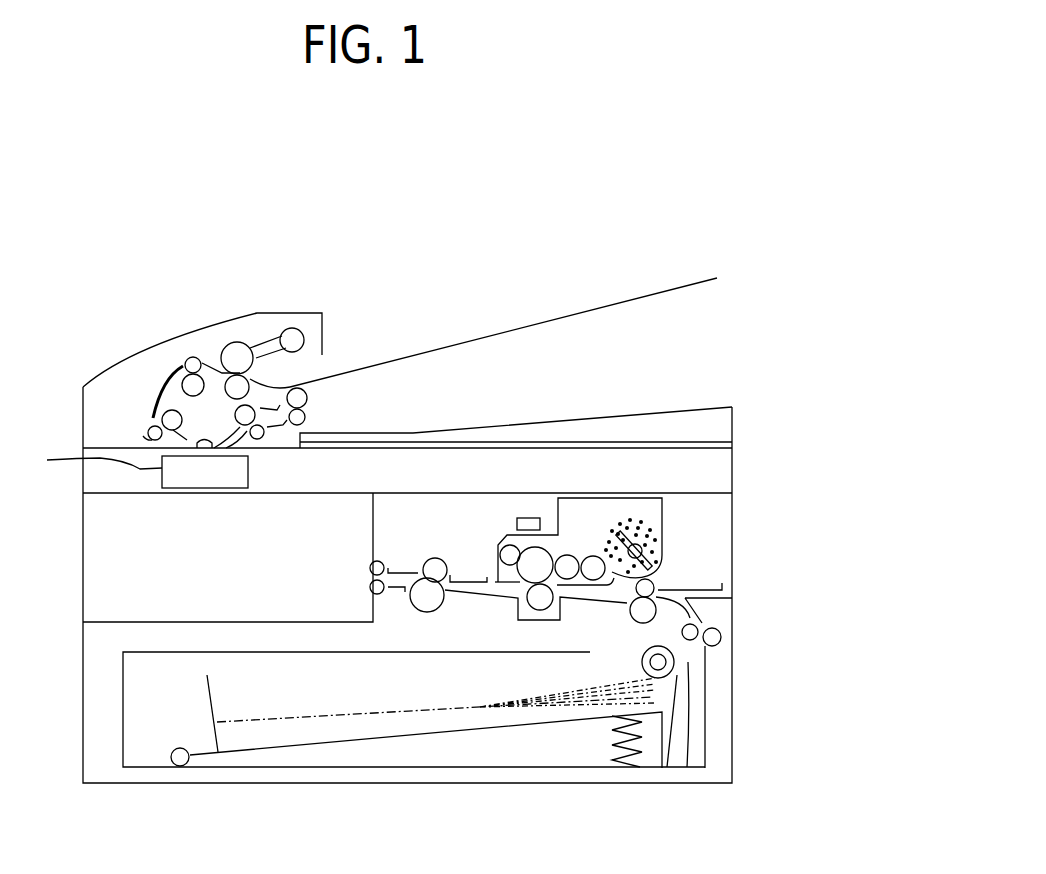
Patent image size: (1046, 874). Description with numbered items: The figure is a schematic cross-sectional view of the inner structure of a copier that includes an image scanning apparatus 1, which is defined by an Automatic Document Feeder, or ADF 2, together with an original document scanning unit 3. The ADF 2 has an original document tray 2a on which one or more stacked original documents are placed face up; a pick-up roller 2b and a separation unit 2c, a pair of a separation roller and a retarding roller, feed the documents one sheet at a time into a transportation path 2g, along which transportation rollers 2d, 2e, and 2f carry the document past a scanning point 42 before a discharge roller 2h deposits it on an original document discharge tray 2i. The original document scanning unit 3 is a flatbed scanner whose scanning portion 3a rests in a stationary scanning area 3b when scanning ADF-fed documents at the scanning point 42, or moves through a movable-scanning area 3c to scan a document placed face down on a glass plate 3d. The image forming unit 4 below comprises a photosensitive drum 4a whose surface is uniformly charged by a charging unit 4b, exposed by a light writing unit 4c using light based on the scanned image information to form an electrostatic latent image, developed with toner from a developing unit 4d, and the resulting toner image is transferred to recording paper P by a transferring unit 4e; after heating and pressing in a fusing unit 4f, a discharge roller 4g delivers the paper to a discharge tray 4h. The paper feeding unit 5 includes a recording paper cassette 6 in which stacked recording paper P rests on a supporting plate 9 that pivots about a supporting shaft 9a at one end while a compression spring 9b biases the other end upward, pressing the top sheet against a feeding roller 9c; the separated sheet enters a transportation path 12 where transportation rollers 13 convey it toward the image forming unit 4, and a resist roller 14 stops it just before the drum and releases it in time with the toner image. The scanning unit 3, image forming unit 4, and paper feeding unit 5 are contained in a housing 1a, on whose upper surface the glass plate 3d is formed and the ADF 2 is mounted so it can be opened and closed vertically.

The image scanning apparatus 1 is at (742, 391).
The housing 1a is at (733, 520).
The Automatic Document Feeder (ADF) 2 is at (208, 352).
The original document tray 2a is at (478, 338).
The pick-up roller 2b is at (290, 325).
The separation unit 2c is at (232, 338).
The transportation roller 2d is at (180, 355).
The transportation roller 2e is at (138, 439).
The transportation roller 2f is at (262, 440).
The transportation path 2g is at (160, 392).
The discharge roller 2h is at (315, 409).
The original document discharge tray 2i is at (532, 422).
The original document scanning unit 3 is at (723, 470).
The scanning portion 3a is at (91, 461).
The stationary scanning area 3b is at (135, 481).
The movable-scanning area 3c is at (470, 468).
The glass plate 3d is at (630, 442).
The scanning point 42 is at (210, 440).
The image forming unit 4 is at (702, 543).
The photosensitive drum 4a is at (527, 577).
The charging unit 4b is at (500, 545).
The light writing unit 4c is at (528, 518).
The developing unit 4d is at (635, 498).
The transferring unit 4e is at (543, 610).
The fusing unit 4f is at (410, 606).
The discharge roller 4g is at (387, 558).
The discharge tray 4h is at (282, 618).
The paper feeding unit 5 is at (97, 685).
The recording paper cassette 6 is at (123, 733).
The supporting plate 9 is at (460, 732).
The supporting shaft 9a is at (178, 755).
The compression spring 9b is at (632, 767).
The feeding roller 9c is at (668, 767).
The transportation path 12 is at (703, 618).
The transportation roller 13 is at (721, 636).
The resist roller 14 is at (660, 578).
The recording paper P is at (385, 702).